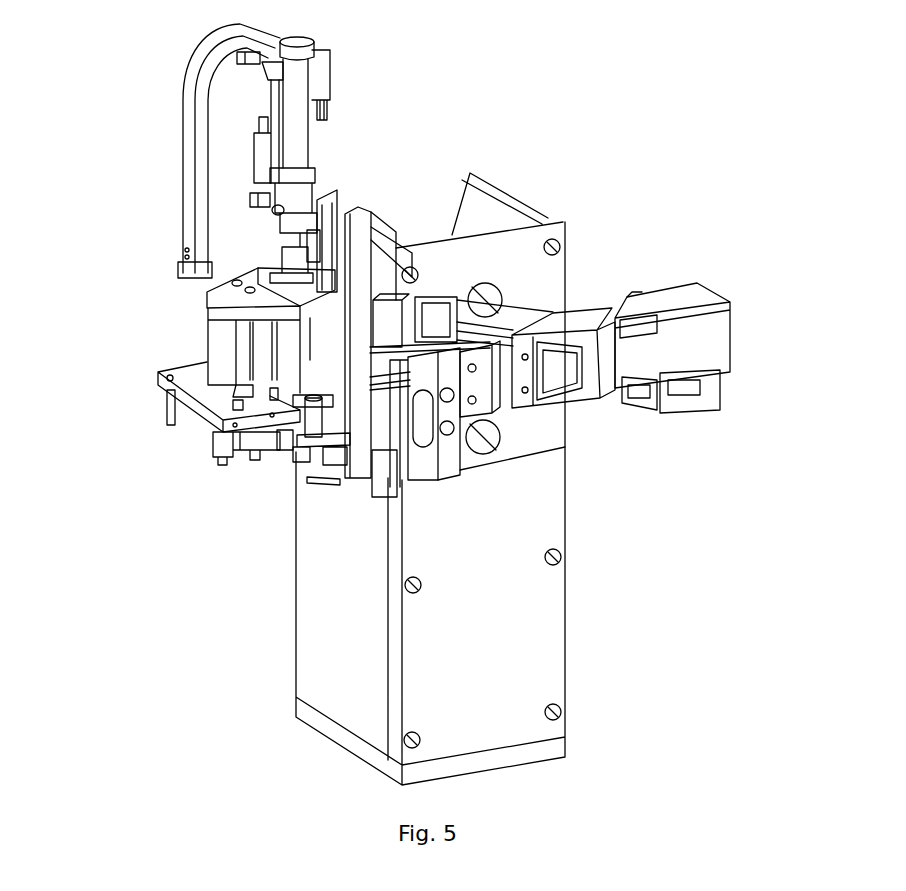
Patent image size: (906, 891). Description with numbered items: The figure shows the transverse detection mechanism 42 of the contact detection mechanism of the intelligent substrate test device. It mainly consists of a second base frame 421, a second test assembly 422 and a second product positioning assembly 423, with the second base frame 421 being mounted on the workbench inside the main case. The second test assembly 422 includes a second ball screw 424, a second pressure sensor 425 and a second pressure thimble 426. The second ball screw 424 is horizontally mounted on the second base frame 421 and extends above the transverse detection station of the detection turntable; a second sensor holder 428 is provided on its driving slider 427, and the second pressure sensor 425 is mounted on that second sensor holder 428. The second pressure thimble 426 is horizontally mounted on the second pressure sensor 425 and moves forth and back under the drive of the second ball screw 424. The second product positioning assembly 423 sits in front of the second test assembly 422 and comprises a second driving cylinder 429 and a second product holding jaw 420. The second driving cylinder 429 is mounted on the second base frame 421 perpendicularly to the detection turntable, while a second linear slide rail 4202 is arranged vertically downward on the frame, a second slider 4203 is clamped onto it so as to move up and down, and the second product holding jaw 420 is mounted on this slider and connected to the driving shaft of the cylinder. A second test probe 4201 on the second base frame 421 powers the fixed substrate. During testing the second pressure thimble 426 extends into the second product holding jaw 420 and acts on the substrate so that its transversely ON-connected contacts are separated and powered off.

The transverse detection mechanism 42 is at (503, 112).
The second product holding jaw 420 is at (208, 393).
The second base frame 421 is at (508, 232).
The second test assembly 422 is at (635, 488).
The second product positioning assembly 423 is at (183, 347).
The second ball screw 424 is at (655, 307).
The second pressure sensor 425 is at (423, 467).
The second pressure thimble 426 is at (325, 483).
The driving slider 427 is at (477, 383).
The second sensor holder 428 is at (447, 453).
The second driving cylinder 429 is at (290, 112).
The second test probe 4201 is at (285, 443).
The second linear slide rail 4202 is at (317, 260).
The second slider 4203 is at (330, 290).